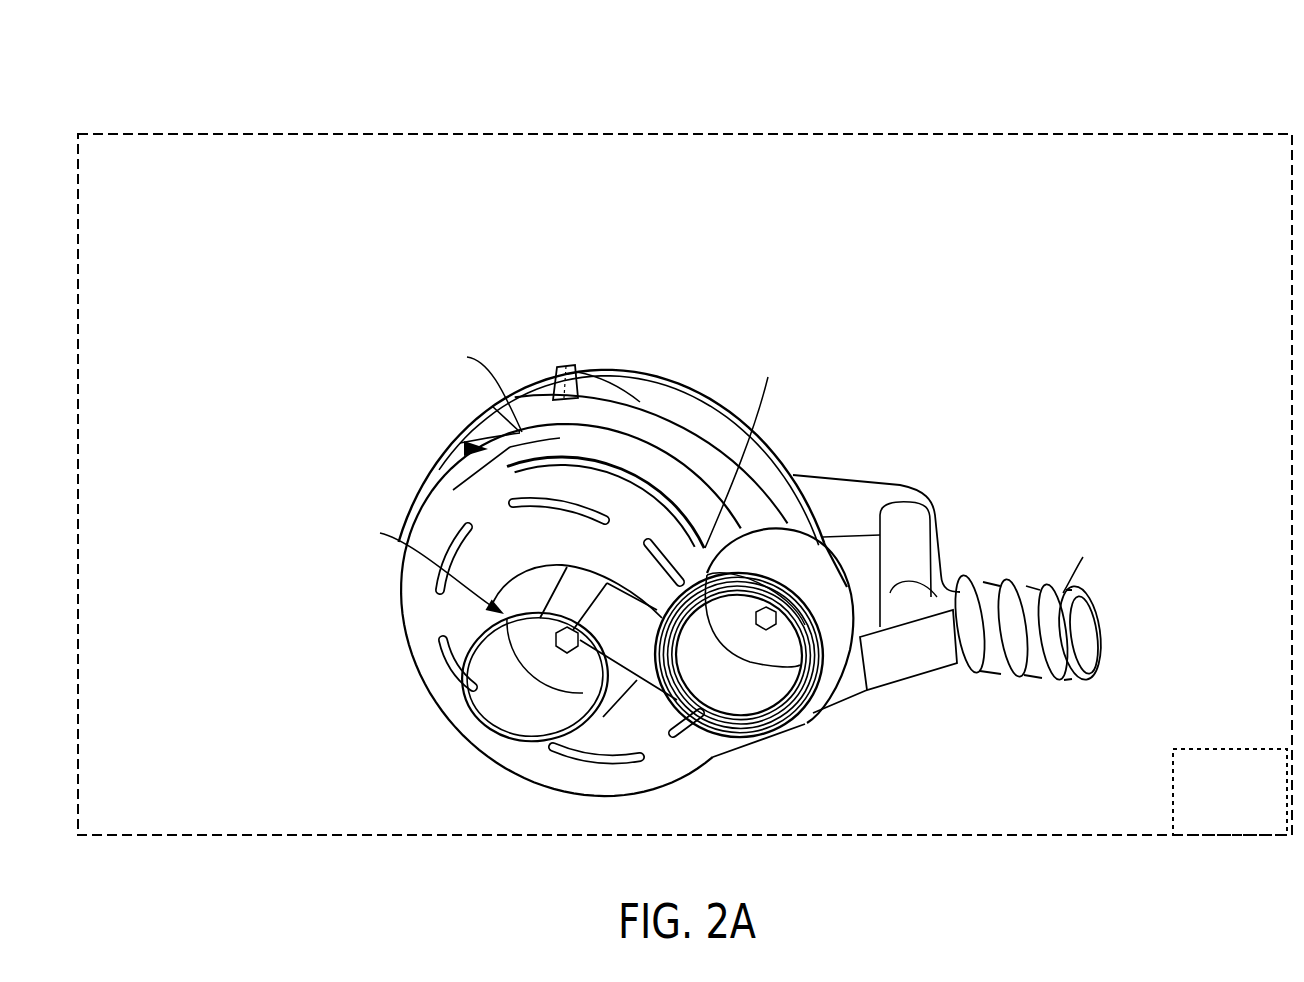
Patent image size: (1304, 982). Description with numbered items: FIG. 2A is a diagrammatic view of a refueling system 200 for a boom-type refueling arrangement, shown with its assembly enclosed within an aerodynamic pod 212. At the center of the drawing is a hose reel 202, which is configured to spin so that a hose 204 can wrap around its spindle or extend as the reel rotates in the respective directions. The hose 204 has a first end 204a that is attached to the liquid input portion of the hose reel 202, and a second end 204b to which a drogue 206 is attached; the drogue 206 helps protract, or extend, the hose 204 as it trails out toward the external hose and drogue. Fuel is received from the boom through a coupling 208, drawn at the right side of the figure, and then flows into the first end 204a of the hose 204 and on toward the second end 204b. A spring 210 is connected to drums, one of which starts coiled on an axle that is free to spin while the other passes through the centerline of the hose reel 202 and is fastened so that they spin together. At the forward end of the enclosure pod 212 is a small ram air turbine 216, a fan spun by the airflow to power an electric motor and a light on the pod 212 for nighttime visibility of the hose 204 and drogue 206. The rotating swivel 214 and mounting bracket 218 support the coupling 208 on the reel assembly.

The refueling system 200 is at (205, 110).
The hose reel 202 is at (412, 620).
The hose 204 is at (442, 471).
The first end 204a is at (553, 372).
The second end 204b is at (523, 443).
The drogue 206 is at (468, 448).
The coupling 208 is at (1008, 580).
The spring 210 is at (613, 628).
The aerodynamic pod 212 is at (130, 840).
The free rotating swivel 214 is at (525, 544).
The ram air turbine 216 is at (1198, 800).
The mounting bracket 218 is at (876, 594).